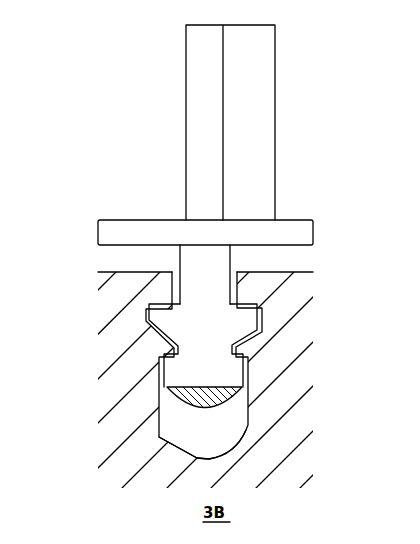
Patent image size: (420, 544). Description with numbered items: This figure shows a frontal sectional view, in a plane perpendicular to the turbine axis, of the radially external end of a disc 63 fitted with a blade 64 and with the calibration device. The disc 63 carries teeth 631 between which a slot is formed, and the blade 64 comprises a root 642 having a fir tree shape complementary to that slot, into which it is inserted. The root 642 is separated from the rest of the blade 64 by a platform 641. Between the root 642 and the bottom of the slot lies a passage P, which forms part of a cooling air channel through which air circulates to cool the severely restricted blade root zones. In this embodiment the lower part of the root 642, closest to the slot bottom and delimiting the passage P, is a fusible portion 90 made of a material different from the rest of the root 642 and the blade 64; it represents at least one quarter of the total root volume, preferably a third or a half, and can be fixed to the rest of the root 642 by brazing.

The disc 63 is at (74, 471).
The tooth 631 is at (118, 382).
The blade 64 is at (172, 108).
The platform 641 is at (137, 229).
The root 642 is at (198, 335).
The fusible portion 90 is at (246, 405).
The passage P is at (172, 422).